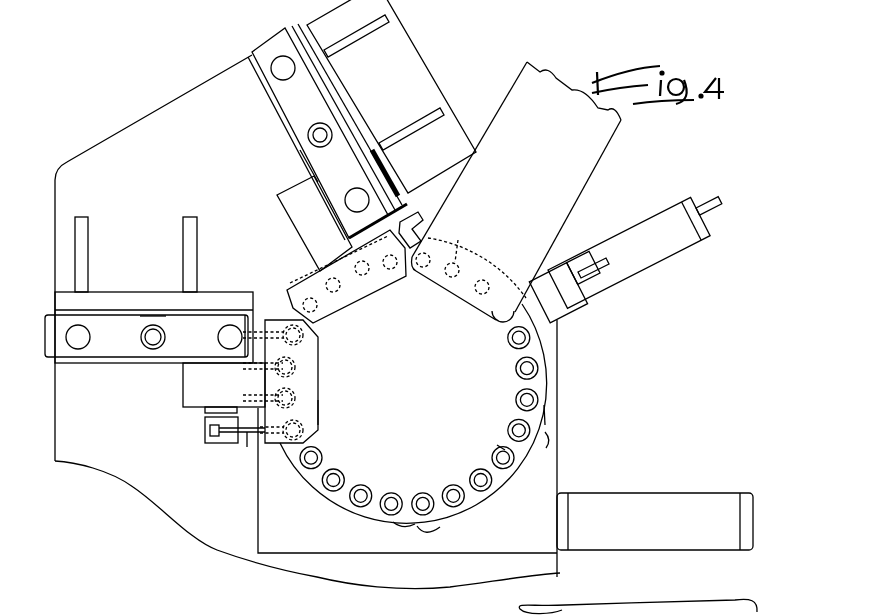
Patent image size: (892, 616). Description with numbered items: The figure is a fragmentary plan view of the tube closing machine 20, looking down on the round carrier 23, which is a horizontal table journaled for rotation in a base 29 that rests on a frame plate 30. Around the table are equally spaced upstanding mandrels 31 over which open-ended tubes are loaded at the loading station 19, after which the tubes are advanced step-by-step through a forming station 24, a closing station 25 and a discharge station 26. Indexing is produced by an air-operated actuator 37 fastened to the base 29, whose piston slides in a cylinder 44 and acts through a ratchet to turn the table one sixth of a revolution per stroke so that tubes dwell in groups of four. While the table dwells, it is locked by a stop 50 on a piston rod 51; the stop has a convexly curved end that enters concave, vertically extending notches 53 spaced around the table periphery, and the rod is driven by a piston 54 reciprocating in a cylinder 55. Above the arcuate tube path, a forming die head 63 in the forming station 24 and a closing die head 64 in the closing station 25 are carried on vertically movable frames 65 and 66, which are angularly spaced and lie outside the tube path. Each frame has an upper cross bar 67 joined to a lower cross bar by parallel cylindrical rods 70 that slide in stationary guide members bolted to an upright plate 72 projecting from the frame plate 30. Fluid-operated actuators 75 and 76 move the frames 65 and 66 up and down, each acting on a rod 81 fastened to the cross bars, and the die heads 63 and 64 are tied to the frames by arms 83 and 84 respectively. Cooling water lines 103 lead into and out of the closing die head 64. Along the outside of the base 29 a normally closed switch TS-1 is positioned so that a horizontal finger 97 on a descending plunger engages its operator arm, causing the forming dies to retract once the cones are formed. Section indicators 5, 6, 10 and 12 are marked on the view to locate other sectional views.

The section line 5- 5 is at (33, 375).
The section line 6- 6 is at (378, 448).
The section line 10- 10 is at (299, 248).
The section line 12- 12 is at (457, 235).
The loading station 19 is at (384, 524).
The tube closing machine 20 is at (573, 392).
The carrier 23 is at (543, 416).
The forming station 24 is at (321, 392).
The closing station 25 is at (383, 303).
The discharge station 26 is at (444, 245).
The base 29 is at (262, 523).
The frame plate 30 is at (191, 512).
The mandrels 31 is at (519, 407).
The air-operated actuator 37 is at (600, 141).
The cylinder 44 is at (723, 501).
The stop 50 is at (569, 311).
The piston rod 51 is at (598, 296).
The notches 53 is at (548, 440).
The piston 54 is at (672, 252).
The cylinder 55 is at (669, 273).
The forming die head 63 is at (313, 415).
The closing die head 64 is at (389, 280).
The frame 65 is at (103, 380).
The frame 66 is at (326, 98).
The upper cross bar 67 is at (286, 113).
The cylindrical rods 70 is at (277, 74).
The upright plate 72 is at (97, 299).
The fluid-operated actuator 75 is at (151, 312).
The fluid-operated actuator 76 is at (304, 153).
The rod 81 is at (308, 139).
The arm 83 is at (187, 392).
The arm 84 is at (293, 198).
The horizontal finger 97 is at (247, 447).
The cooling water lines 103 is at (405, 217).
The normally closed switch TS-1 is at (217, 441).